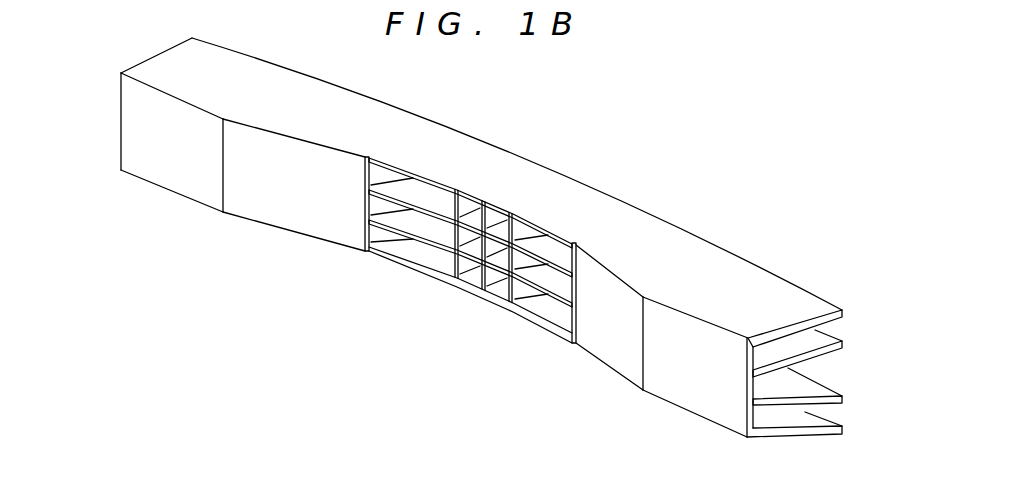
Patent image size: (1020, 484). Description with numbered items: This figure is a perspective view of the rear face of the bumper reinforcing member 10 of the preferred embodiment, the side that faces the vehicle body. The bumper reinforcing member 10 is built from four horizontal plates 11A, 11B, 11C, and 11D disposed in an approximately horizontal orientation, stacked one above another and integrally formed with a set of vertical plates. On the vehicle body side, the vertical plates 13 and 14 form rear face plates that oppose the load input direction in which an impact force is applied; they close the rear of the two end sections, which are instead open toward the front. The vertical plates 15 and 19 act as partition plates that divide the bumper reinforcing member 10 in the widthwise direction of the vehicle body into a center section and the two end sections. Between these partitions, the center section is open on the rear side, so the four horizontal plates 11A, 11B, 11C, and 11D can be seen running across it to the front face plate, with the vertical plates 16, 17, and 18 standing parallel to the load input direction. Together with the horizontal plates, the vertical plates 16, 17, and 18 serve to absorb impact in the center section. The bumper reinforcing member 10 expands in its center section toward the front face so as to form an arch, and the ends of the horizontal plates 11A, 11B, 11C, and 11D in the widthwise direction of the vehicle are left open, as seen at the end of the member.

The bumper reinforcing member 10 is at (623, 186).
The horizontal plate 11A is at (790, 300).
The horizontal plate 11B is at (832, 339).
The horizontal plate 11C is at (824, 392).
The horizontal plate 11D is at (827, 424).
The vertical plate 13 is at (153, 167).
The vertical plate 14 is at (683, 393).
The vertical plate 15 is at (386, 238).
The vertical plate 16 is at (448, 264).
The vertical plate 17 is at (481, 284).
The vertical plate 18 is at (527, 298).
The vertical plate 19 is at (571, 325).